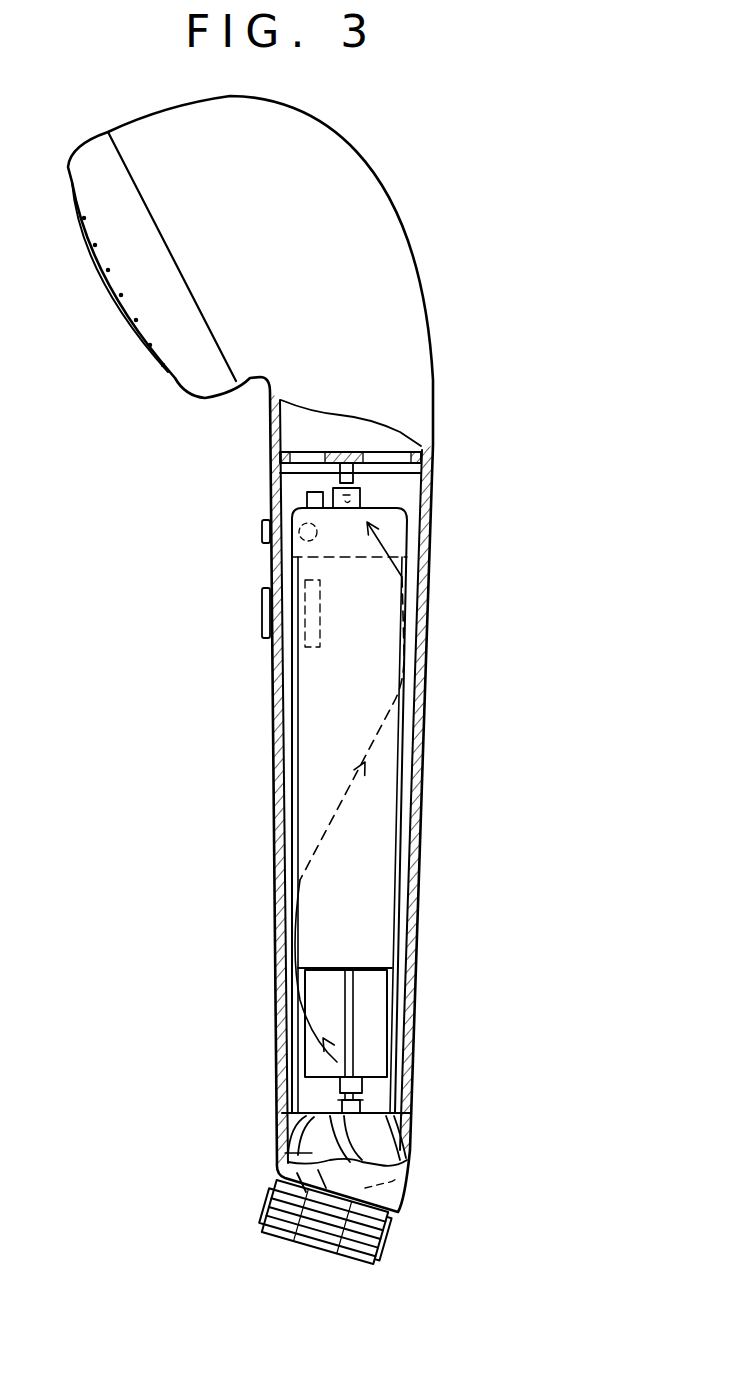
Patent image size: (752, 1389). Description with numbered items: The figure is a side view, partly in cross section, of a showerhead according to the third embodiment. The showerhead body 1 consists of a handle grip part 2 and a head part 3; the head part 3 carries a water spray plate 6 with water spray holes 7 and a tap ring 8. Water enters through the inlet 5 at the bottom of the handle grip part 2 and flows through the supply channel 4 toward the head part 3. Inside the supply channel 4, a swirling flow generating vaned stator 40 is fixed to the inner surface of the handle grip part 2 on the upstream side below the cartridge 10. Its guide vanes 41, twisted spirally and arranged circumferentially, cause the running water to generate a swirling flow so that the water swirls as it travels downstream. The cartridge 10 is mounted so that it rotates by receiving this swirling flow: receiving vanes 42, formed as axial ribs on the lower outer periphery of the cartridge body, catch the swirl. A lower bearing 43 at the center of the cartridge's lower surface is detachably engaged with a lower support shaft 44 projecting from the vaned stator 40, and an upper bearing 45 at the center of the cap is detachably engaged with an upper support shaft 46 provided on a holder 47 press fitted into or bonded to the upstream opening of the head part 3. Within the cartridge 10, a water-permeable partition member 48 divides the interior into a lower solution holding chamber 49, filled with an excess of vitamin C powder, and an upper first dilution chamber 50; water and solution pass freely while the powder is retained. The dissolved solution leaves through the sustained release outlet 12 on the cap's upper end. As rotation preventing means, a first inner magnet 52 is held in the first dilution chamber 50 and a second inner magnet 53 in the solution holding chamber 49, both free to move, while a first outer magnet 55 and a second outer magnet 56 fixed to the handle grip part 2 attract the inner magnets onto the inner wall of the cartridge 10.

The showerhead body 1 is at (422, 268).
The handle grip part 2 is at (420, 823).
The head part 3 is at (350, 146).
The supply channel 4 is at (292, 820).
The inlet 5 is at (300, 1253).
The water spray plate 6 is at (103, 283).
The water spray holes 7 is at (117, 298).
The tap ring 8 is at (90, 148).
The cartridge 10 is at (390, 745).
The sustained release outlet 12 is at (313, 492).
The swirling flow generating vaned stator 40 is at (377, 1142).
The guide vanes 41 is at (362, 1107).
The receiving vanes 42 is at (390, 1030).
The lower bearing 43 is at (362, 1087).
The lower support shaft 44 is at (340, 1105).
The upper bearing 45 is at (362, 492).
The upper support shaft 46 is at (337, 478).
The holder 47 is at (303, 450).
The water-permeable partition member 48 is at (408, 530).
The solution holding chamber 49 is at (370, 882).
The first dilution chamber 50 is at (397, 538).
The first inner magnet 52 is at (298, 542).
The second inner magnet 53 is at (317, 647).
The first outer magnet 55 is at (262, 533).
The second outer magnet 56 is at (263, 625).